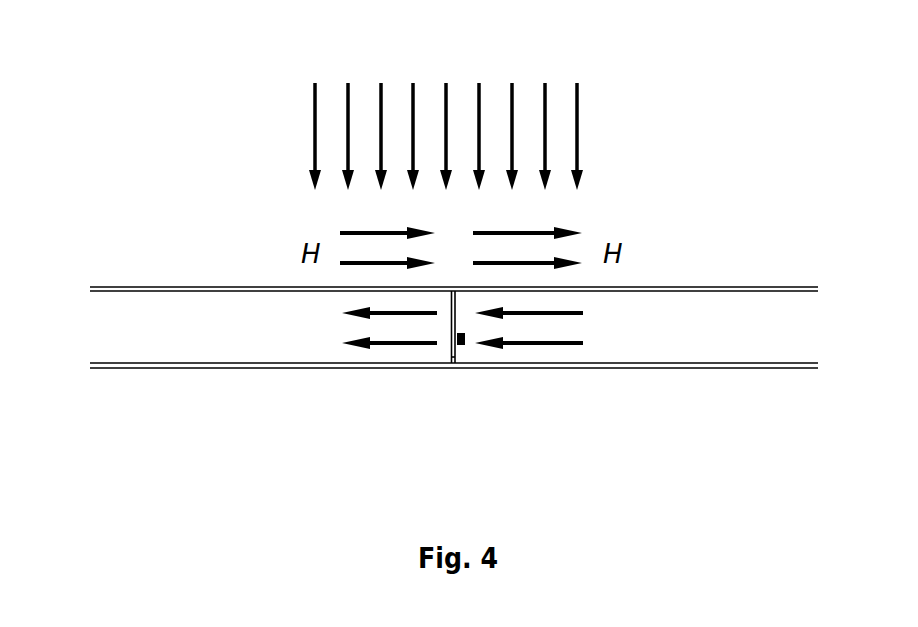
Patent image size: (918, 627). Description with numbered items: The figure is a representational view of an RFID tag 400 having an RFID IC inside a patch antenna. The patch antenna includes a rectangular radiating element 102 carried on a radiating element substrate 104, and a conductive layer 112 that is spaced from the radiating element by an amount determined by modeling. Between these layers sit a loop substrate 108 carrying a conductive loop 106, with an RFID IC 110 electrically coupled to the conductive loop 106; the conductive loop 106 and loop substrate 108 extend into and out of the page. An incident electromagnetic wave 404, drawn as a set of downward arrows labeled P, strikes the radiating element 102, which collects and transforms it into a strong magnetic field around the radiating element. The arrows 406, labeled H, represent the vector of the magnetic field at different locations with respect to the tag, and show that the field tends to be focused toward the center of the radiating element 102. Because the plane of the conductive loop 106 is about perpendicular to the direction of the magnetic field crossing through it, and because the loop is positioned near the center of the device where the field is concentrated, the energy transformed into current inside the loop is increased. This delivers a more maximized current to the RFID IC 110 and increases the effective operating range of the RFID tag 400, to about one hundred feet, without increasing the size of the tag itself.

The RFID tag 400 is at (86, 94).
The incident electromagnetic wave 404 is at (622, 158).
The radiating element 102 is at (655, 258).
The radiating element substrate 104 is at (177, 288).
The conductive layer 112 is at (687, 367).
The conductive loop 106 is at (452, 332).
The loop substrate 108 is at (447, 357).
The RFID IC 110 is at (463, 345).
The arrows 406 is at (333, 338).